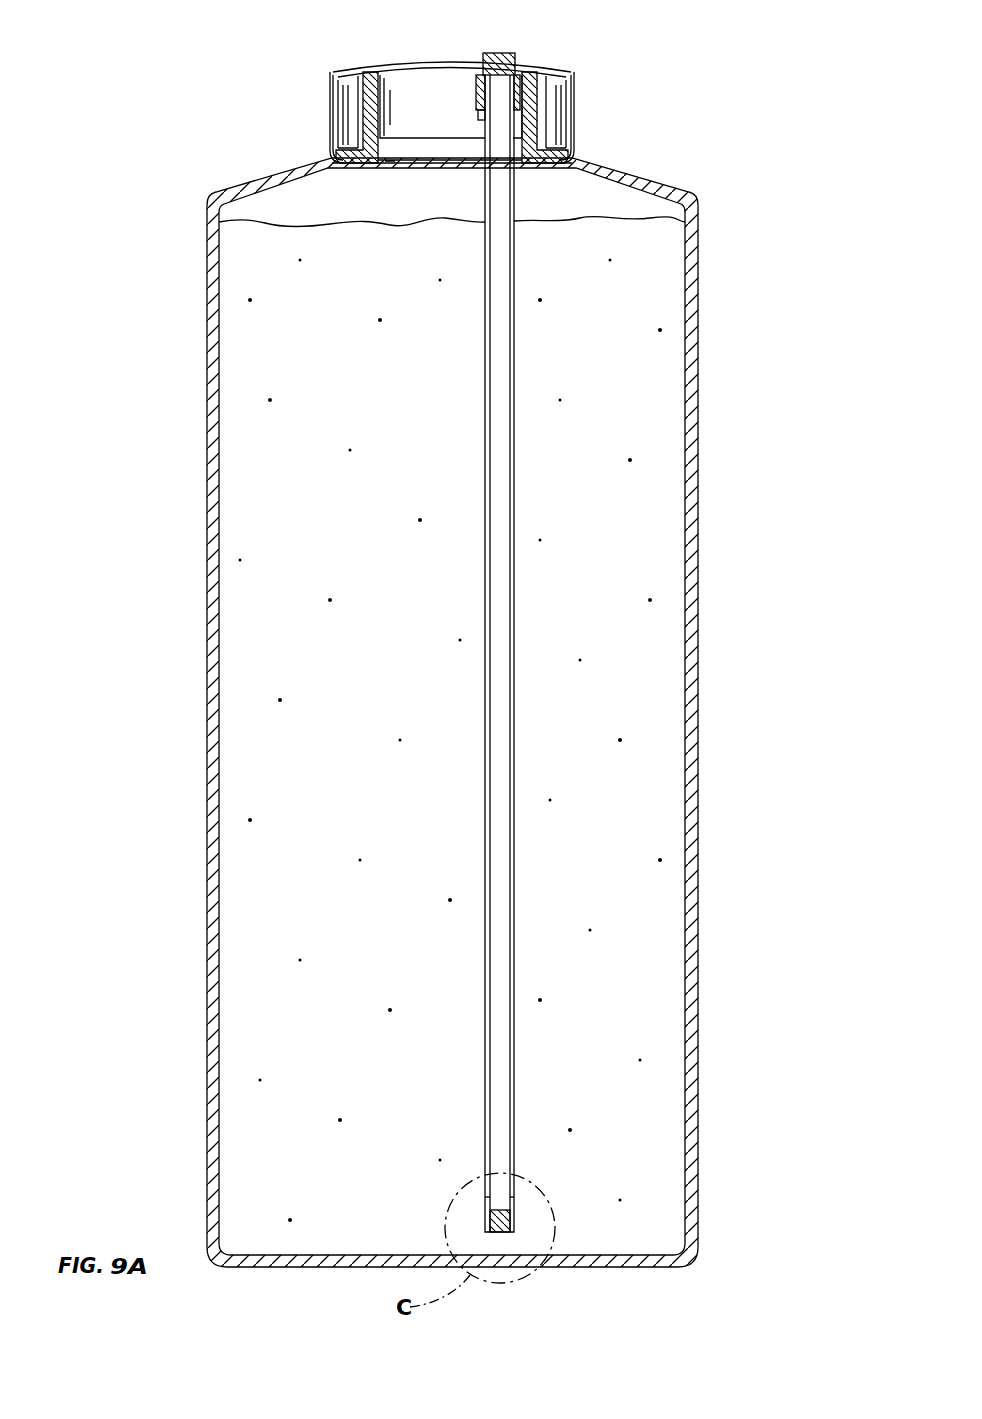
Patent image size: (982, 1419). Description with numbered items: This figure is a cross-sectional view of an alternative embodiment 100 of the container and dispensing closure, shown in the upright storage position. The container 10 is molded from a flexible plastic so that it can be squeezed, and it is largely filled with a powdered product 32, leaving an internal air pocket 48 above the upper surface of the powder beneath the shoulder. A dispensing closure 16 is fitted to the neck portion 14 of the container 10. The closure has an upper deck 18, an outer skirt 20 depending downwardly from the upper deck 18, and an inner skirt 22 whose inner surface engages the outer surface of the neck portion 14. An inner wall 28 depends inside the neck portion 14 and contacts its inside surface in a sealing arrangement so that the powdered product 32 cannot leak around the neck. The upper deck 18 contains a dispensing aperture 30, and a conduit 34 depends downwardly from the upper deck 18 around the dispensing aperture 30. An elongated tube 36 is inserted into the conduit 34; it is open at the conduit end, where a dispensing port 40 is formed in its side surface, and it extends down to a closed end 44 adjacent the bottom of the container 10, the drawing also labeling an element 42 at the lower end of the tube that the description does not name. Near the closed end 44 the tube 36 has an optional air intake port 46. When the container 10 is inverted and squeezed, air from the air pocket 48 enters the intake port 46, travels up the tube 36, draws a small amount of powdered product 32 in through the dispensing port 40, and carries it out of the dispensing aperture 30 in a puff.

The container 10 is at (698, 522).
The neck portion 14 is at (372, 90).
The dispensing closure 16 is at (578, 93).
The upper deck 18 is at (395, 67).
The outer skirt 20 is at (333, 105).
The inner skirt 22 is at (358, 133).
The inner wall 28 is at (413, 90).
The dispensing aperture 30 is at (495, 53).
The powdered product 32 is at (242, 490).
The conduit 34 is at (473, 83).
The elongated tube 36 is at (500, 787).
The dispensing port 40 is at (480, 115).
The tube plug 42 is at (500, 1222).
The closed end 44 is at (514, 1197).
The air intake port 46 is at (485, 1198).
The internal air pocket 48 is at (625, 202).
The alternative embodiment 100 is at (815, 178).